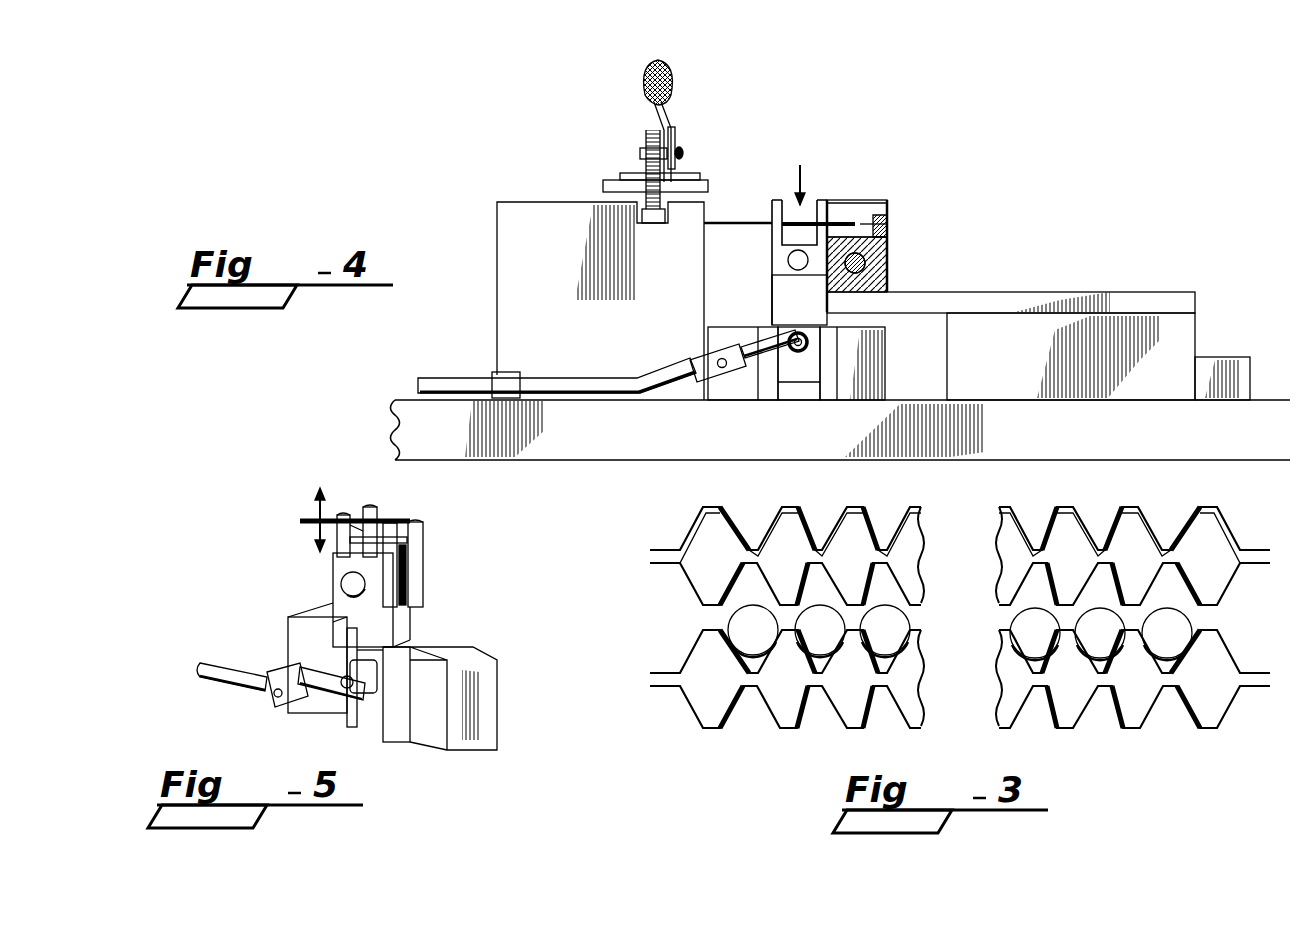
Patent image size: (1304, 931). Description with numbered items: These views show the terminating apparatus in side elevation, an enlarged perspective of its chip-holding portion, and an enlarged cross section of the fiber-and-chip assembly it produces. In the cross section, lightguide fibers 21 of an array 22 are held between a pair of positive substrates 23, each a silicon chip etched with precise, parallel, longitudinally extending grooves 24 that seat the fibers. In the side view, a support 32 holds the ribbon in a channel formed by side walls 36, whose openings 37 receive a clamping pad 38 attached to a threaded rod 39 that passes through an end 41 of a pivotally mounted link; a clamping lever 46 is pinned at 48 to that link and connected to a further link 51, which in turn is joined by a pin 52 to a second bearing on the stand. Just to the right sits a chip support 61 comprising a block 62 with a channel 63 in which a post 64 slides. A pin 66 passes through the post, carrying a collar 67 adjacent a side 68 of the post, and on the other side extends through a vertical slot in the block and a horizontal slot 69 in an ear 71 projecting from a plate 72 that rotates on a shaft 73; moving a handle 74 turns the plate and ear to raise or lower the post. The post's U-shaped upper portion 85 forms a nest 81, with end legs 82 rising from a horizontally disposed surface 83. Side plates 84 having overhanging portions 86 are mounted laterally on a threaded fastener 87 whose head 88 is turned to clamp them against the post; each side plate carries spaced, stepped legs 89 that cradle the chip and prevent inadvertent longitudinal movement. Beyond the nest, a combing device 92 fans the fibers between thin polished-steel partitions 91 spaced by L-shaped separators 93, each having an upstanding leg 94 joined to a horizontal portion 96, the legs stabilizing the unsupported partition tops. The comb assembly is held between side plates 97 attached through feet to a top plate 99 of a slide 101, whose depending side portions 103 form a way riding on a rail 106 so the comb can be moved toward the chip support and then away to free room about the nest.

In FIG. 3, the lightguide fiber 21 is at (1022, 618).
In FIG. 4, the lightguide fiber 21 is at (845, 218).
In FIG. 4, the array 22 is at (721, 222).
In FIG. 3, the positive substrate 23 is at (788, 518).
In FIG. 3, the groove 24 is at (740, 590).
In FIG. 4, the support 32 is at (496, 290).
In FIG. 4, the side wall 36 is at (496, 226).
In FIG. 4, the opening 37 is at (670, 210).
In FIG. 4, the clamping pad 38 is at (652, 225).
In FIG. 4, the threaded rod 39 is at (645, 168).
In FIG. 4, the end of link 41 is at (640, 156).
In FIG. 4, the clamping lever 46 is at (672, 68).
In FIG. 4, the pin 48 is at (674, 126).
In FIG. 4, the link 51 is at (676, 136).
In FIG. 4, the pin 52 is at (684, 154).
In FIG. 4, the support 61 is at (848, 397).
In FIG. 5, the support 61 is at (232, 579).
In FIG. 4, the block 62 is at (876, 364).
In FIG. 5, the block 62 is at (432, 693).
In FIG. 5, the channel 63 is at (420, 657).
In FIG. 4, the post 64 is at (782, 302).
In FIG. 5, the post 64 is at (400, 633).
In FIG. 4, the pin 66 is at (821, 321).
In FIG. 5, the pin 66 is at (347, 690).
In FIG. 5, the collar 67 is at (365, 700).
In FIG. 5, the side of post 68 is at (395, 628).
In FIG. 4, the slot 69 is at (789, 330).
In FIG. 4, the ear 71 is at (790, 395).
In FIG. 5, the ear 71 is at (332, 688).
In FIG. 4, the plate 72 is at (700, 383).
In FIG. 5, the plate 72 is at (282, 707).
In FIG. 4, the shaft 73 is at (722, 368).
In FIG. 5, the shaft 73 is at (272, 697).
In FIG. 4, the handle 74 is at (451, 372).
In FIG. 5, the handle 74 is at (236, 661).
In FIG. 4, the nest 81 is at (812, 172).
In FIG. 5, the nest 81 is at (392, 510).
In FIG. 5, the end leg 82 is at (405, 560).
In FIG. 5, the horizontally disposed surface 83 is at (347, 574).
In FIG. 5, the side plate 84 is at (424, 527).
In FIG. 5, the upper portion 85 is at (404, 569).
In FIG. 5, the overhanging portion 86 is at (418, 590).
In FIG. 4, the threaded fastener 87 is at (788, 260).
In FIG. 4, the head 88 is at (770, 244).
In FIG. 5, the head 88 is at (340, 586).
In FIG. 4, the leg 89 is at (776, 201).
In FIG. 5, the leg 89 is at (341, 516).
In FIG. 4, the partition 91 is at (888, 204).
In FIG. 4, the combing device 92 is at (888, 246).
In FIG. 4, the separator 93 is at (889, 225).
In FIG. 4, the upstanding leg 94 is at (877, 218).
In FIG. 4, the horizontal portion 96 is at (890, 281).
In FIG. 4, the side plate 97 is at (855, 204).
In FIG. 4, the top plate 99 is at (1111, 288).
In FIG. 4, the slide 101 is at (1170, 293).
In FIG. 4, the depending side portion 103 is at (1143, 383).
In FIG. 4, the rail 106 is at (1222, 357).